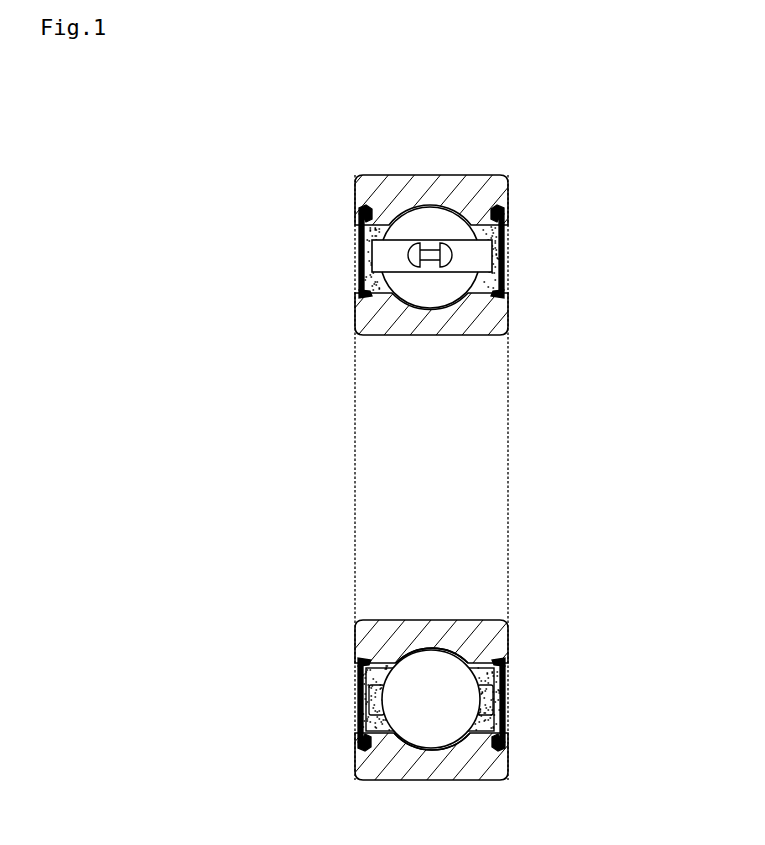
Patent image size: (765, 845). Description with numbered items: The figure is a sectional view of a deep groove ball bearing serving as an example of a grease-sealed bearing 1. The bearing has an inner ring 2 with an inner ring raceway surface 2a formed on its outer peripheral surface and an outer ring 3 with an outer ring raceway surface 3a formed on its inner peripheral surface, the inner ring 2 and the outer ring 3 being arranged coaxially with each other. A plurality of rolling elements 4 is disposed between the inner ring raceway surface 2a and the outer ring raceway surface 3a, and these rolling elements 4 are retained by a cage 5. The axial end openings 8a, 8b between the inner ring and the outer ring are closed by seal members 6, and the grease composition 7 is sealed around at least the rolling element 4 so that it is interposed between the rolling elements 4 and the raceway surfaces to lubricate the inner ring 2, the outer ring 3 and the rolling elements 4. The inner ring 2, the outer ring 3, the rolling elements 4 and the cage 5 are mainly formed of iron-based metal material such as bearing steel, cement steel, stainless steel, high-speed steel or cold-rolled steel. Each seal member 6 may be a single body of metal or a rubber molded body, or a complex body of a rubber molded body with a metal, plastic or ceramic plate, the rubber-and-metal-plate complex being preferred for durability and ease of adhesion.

The grease-sealed bearing 1 is at (541, 195).
The inner ring 2 is at (375, 318).
The inner ring raceway surface 2a is at (447, 657).
The outer ring 3 is at (375, 206).
The outer ring raceway surface 3a is at (392, 734).
The rolling elements 4 is at (437, 713).
The cage 5 is at (383, 258).
The seal members 6 is at (502, 281).
The grease composition 7 is at (503, 250).
The axial end opening 8a is at (505, 230).
The axial end opening 8b is at (362, 233).